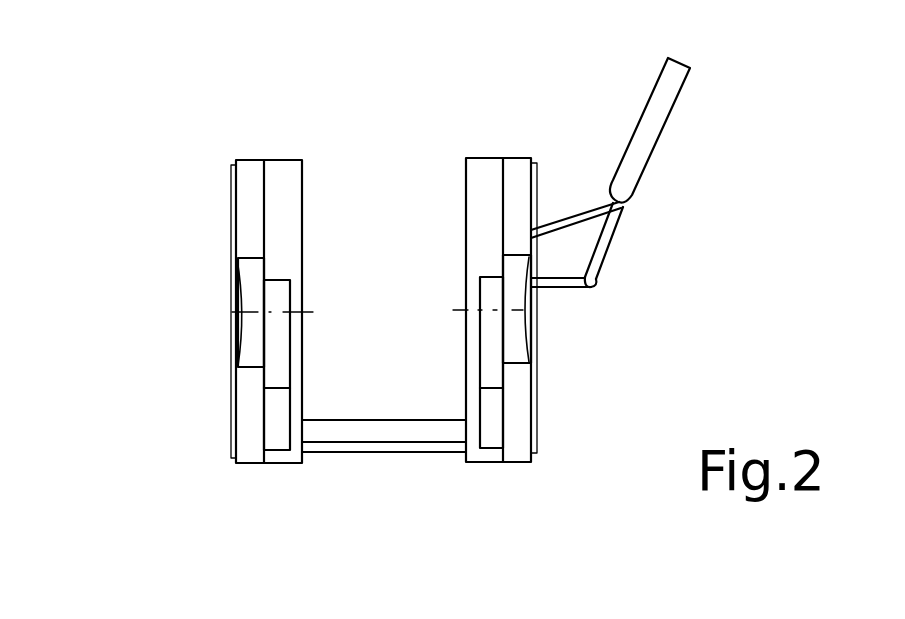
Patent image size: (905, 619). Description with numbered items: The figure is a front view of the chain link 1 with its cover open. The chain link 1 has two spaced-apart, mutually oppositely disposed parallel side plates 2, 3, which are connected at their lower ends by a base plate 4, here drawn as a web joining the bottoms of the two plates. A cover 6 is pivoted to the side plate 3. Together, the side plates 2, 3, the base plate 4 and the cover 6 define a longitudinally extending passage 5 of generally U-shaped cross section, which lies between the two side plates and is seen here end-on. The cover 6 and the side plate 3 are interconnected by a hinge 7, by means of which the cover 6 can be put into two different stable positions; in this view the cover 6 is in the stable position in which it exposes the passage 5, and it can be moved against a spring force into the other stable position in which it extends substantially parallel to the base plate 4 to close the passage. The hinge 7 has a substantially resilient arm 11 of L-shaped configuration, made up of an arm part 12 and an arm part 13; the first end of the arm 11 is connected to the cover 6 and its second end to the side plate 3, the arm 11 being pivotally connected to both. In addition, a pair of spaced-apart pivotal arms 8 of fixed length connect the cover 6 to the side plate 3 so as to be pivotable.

The chain link 1 is at (145, 281).
The side plate 2 is at (257, 165).
The side plate 3 is at (492, 158).
The base plate 4 is at (395, 422).
The passage 5 is at (393, 258).
The cover 6 is at (667, 118).
The hinge 7 is at (662, 329).
The pivotal arms 8 is at (590, 200).
The resilient arm 11 is at (600, 287).
The arm part 12 is at (607, 233).
The arm part 13 is at (562, 288).